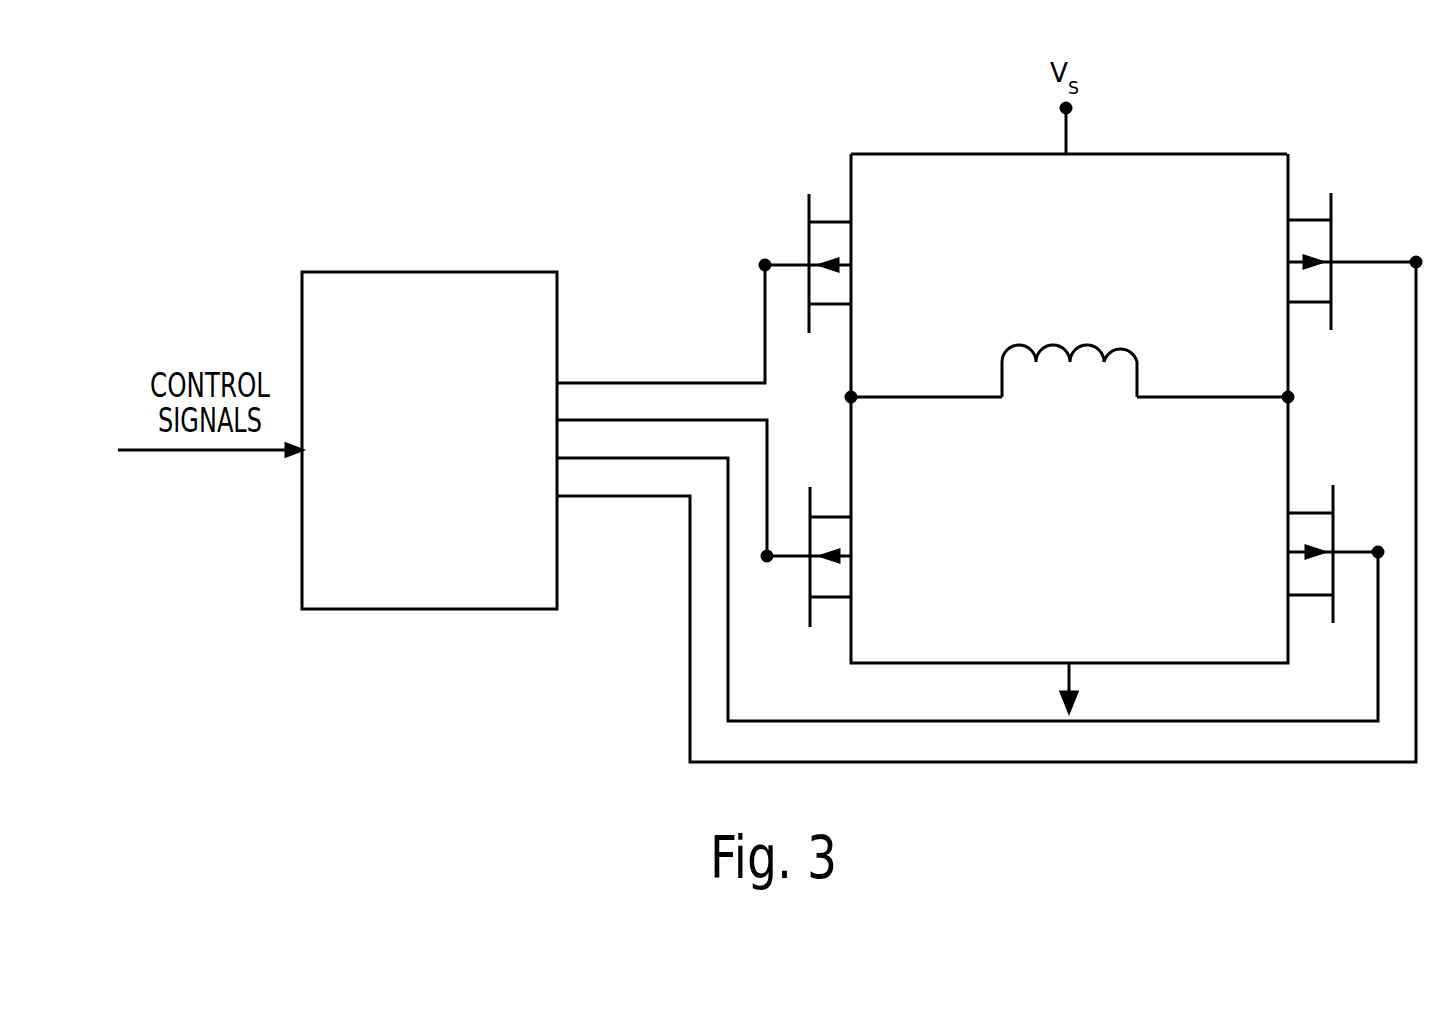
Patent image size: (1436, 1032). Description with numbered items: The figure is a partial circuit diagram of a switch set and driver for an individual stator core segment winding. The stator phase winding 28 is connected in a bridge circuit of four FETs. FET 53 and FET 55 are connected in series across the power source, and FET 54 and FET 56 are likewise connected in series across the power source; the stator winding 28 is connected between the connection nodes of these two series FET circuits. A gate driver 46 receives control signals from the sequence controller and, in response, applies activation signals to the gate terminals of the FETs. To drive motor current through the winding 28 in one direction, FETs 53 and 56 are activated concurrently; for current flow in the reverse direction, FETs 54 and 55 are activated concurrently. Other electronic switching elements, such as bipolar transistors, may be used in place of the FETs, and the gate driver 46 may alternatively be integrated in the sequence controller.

The stator phase winding 28 is at (1052, 350).
The gate driver 46 is at (482, 610).
The FET 53 is at (809, 232).
The FET 54 is at (1331, 228).
The FET 55 is at (810, 608).
The FET 56 is at (1333, 604).